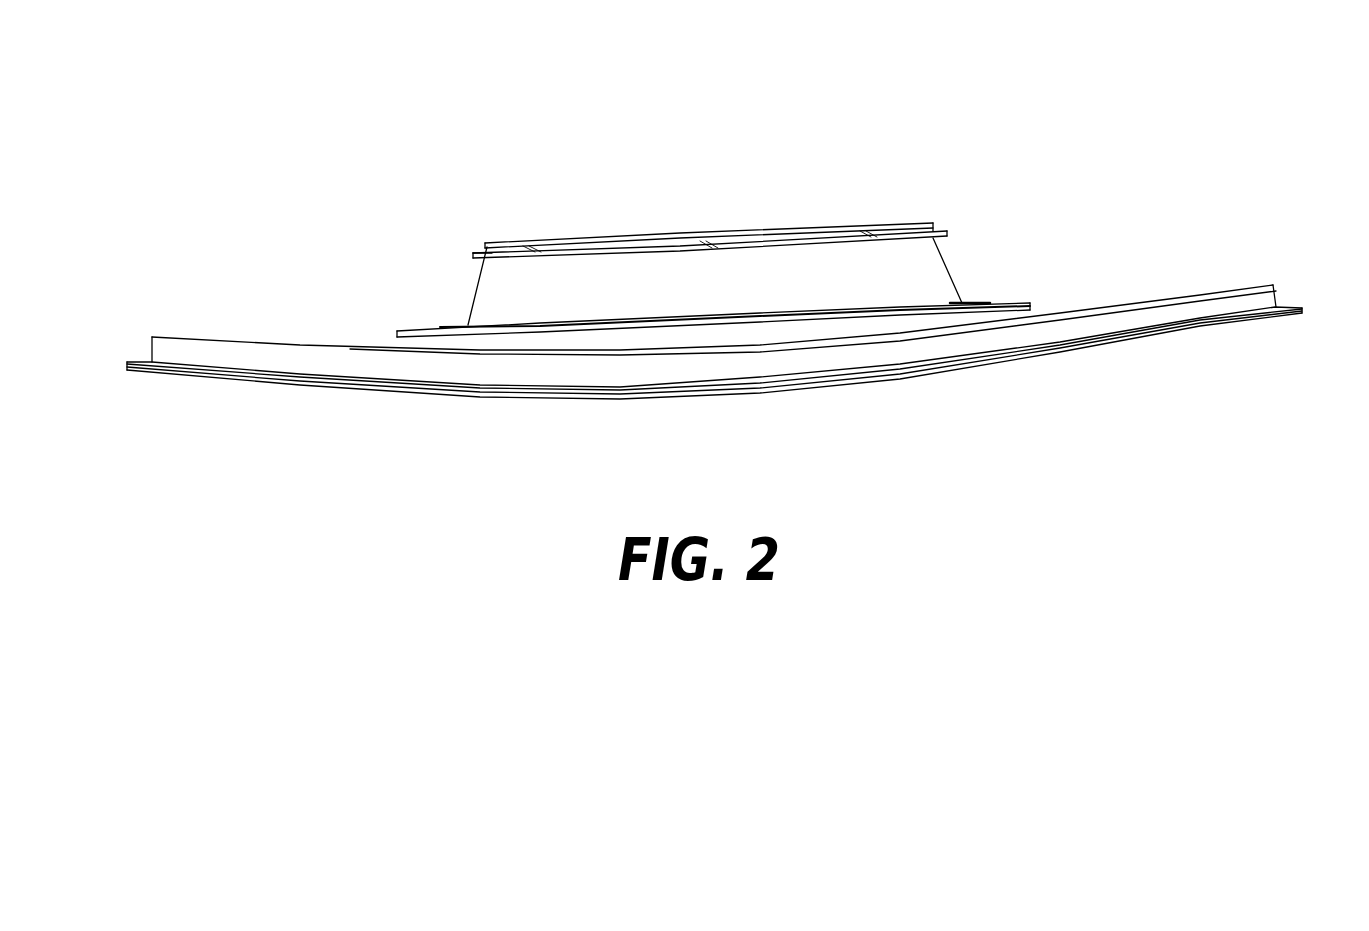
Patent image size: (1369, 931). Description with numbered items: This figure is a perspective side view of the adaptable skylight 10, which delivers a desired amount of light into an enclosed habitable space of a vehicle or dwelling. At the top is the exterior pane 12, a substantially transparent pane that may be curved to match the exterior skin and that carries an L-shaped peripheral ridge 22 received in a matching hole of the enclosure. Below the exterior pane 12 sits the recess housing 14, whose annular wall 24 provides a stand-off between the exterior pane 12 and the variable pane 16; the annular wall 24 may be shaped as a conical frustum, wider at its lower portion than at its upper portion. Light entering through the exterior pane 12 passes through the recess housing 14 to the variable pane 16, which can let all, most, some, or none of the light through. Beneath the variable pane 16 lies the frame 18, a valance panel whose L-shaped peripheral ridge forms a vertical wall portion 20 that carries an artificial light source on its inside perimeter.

The adaptable skylight 10 is at (268, 126).
The exterior pane 12 is at (740, 248).
The recess housing 14 is at (954, 249).
The variable pane 16 is at (1010, 303).
The frame 18 is at (1220, 272).
The vertical wall portion 20 is at (1150, 322).
The L-shaped peripheral ridge 22 is at (487, 245).
The annular wall 24 is at (483, 295).